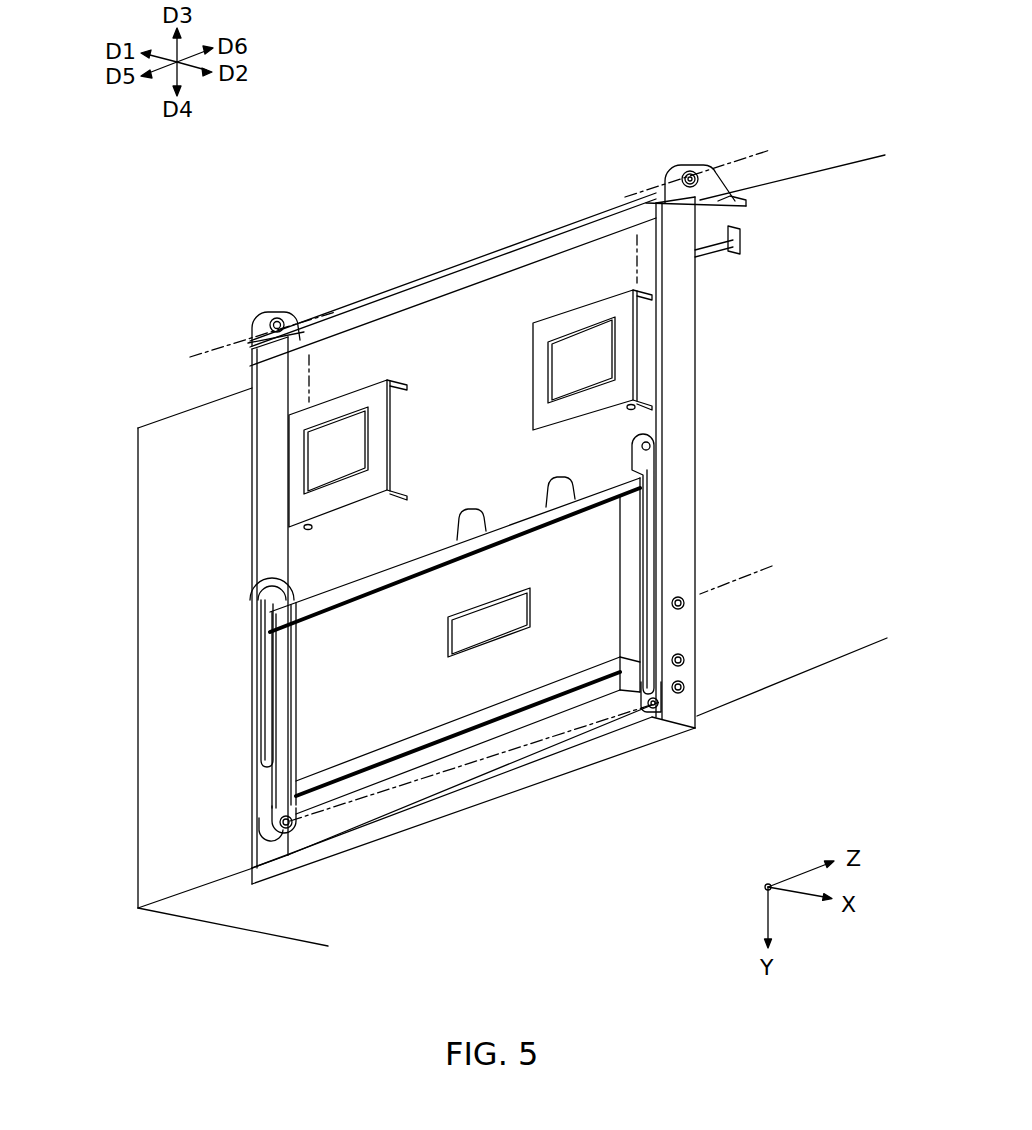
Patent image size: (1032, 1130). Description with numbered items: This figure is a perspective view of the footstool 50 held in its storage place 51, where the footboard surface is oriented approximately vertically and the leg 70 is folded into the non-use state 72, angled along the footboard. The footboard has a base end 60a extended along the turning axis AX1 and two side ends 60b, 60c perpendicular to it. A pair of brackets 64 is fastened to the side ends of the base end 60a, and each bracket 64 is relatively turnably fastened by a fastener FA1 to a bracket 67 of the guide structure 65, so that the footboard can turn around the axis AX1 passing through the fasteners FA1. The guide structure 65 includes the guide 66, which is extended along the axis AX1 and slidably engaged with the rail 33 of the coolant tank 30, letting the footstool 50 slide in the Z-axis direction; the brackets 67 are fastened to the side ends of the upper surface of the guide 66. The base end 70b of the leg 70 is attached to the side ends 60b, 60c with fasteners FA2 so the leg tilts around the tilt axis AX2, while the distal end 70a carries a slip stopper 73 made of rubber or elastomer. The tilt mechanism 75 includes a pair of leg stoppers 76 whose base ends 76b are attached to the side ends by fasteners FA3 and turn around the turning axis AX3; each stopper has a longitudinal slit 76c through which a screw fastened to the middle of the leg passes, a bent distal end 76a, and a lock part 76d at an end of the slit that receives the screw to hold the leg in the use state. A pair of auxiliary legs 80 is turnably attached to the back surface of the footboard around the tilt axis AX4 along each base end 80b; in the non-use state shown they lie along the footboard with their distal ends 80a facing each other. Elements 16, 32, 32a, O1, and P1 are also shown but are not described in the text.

The door 16 is at (180, 443).
The coolant tank 30 is at (133, 913).
The side wall 32 is at (163, 486).
The edge of side wall 32a is at (848, 163).
The rail 33 is at (792, 435).
The footstool 50 is at (397, 285).
The storage place 51 is at (482, 805).
The base end of the footboard 60a is at (487, 260).
The side end of the footboard 60b is at (252, 378).
The side end of the footboard 60c is at (677, 312).
The bracket 64 is at (266, 316).
The guide structure 65 is at (742, 177).
The guide 66 is at (733, 248).
The bracket 67 is at (252, 325).
The leg 70 is at (637, 577).
The distal end of the leg 70a is at (476, 507).
The base end of the leg 70b is at (288, 833).
The non-use state 72 is at (320, 568).
The slip stopper 73 is at (457, 528).
The tilt mechanism 75 is at (292, 830).
The leg stopper 76 is at (262, 690).
The distal end of the leg stopper 76a is at (260, 588).
The base end of the leg stopper 76b is at (260, 762).
The slit 76c is at (262, 601).
The lock part 76d is at (251, 582).
The auxiliary leg 80 is at (283, 509).
The distal end of the auxiliary leg 80a is at (389, 427).
The base end of the auxiliary leg 80b is at (288, 468).
The turning axis AX1 is at (480, 253).
The tilt axis AX2 is at (475, 761).
The turning axis AX3 is at (762, 572).
The tilt axis AX4 is at (473, 318).
The fastener FA1 is at (277, 318).
The fastener FA2 is at (300, 826).
The fastener FA3 is at (686, 603).
The opening O1 is at (97, 840).
The position P1 is at (540, 820).